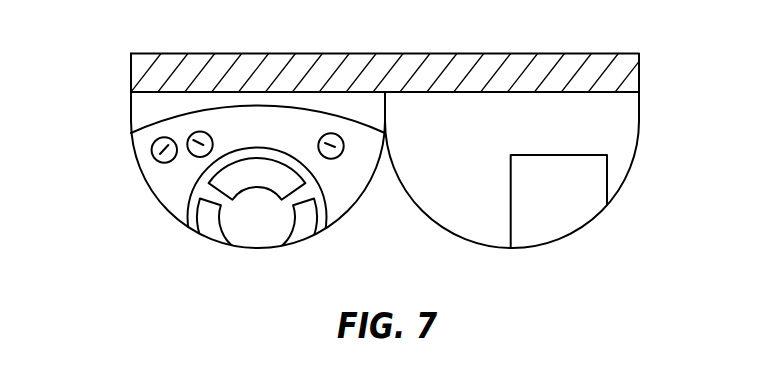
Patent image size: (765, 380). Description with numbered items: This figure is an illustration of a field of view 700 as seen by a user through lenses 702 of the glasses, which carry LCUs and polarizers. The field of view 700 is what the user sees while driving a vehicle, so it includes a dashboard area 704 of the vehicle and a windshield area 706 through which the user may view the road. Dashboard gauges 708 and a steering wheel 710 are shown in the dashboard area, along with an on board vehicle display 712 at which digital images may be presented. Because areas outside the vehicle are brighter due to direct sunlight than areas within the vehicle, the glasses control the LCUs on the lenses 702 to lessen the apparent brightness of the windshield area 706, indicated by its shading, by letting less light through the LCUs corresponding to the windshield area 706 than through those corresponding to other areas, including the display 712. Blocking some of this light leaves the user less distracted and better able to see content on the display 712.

The field of view 700 is at (612, 125).
The lenses 702 is at (553, 53).
The dashboard area 704 is at (141, 111).
The windshield area 706 is at (130, 75).
The dashboard gauges 708 is at (152, 153).
The steering wheel 710 is at (246, 230).
The on board vehicle display 712 is at (567, 213).